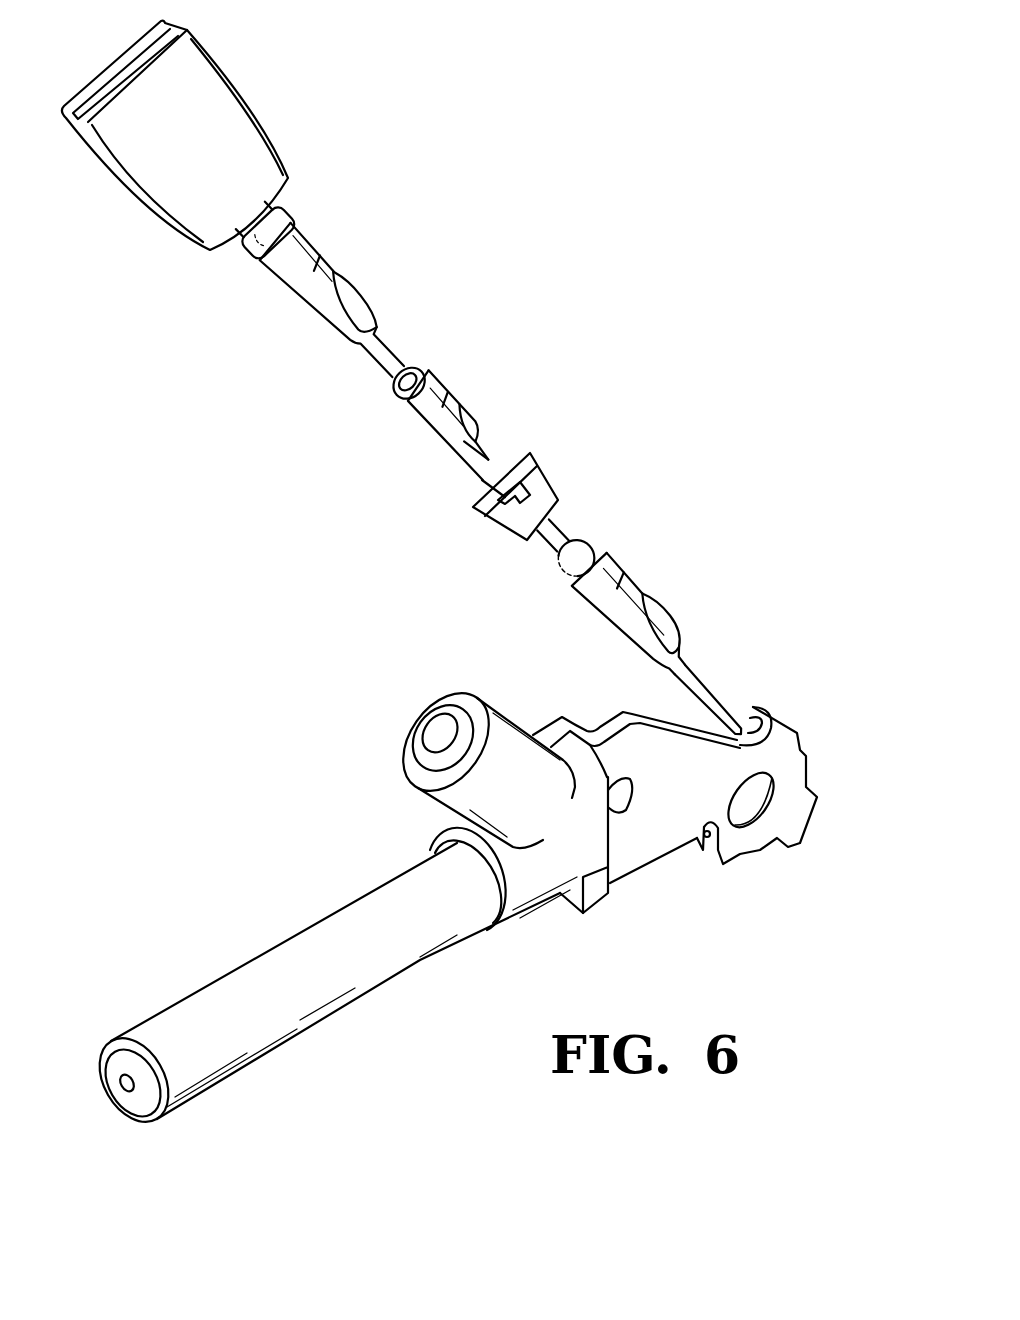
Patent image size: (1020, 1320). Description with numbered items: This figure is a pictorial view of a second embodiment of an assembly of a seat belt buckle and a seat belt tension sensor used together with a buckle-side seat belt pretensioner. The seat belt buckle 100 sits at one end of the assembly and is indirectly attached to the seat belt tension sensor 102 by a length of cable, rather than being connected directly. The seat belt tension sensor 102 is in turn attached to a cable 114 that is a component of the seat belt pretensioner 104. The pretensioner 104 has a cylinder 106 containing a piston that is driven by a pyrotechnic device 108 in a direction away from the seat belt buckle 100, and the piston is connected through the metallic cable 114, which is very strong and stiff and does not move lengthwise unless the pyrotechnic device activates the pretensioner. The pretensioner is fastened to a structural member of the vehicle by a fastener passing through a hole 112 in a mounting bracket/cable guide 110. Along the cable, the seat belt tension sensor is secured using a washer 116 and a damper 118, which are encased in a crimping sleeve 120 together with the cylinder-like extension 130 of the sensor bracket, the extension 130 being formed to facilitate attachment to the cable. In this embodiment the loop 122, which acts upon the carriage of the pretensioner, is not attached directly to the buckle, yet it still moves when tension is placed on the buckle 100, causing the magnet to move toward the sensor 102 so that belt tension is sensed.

The seat belt buckle 100 is at (210, 110).
The seat belt tension sensor 102 is at (566, 454).
The buckle pretensioner 104 is at (282, 921).
The cylinder 106 is at (230, 993).
The pyrotechnic device 108 is at (432, 733).
The mounting bracket/cable guide 110 is at (647, 840).
The hole 112 is at (773, 780).
The cable 114 is at (392, 358).
The washer 116 is at (322, 272).
The damper 118 is at (366, 304).
The crimping sleeve 120 is at (305, 316).
The loop 122 is at (527, 484).
The extension 130 is at (607, 580).